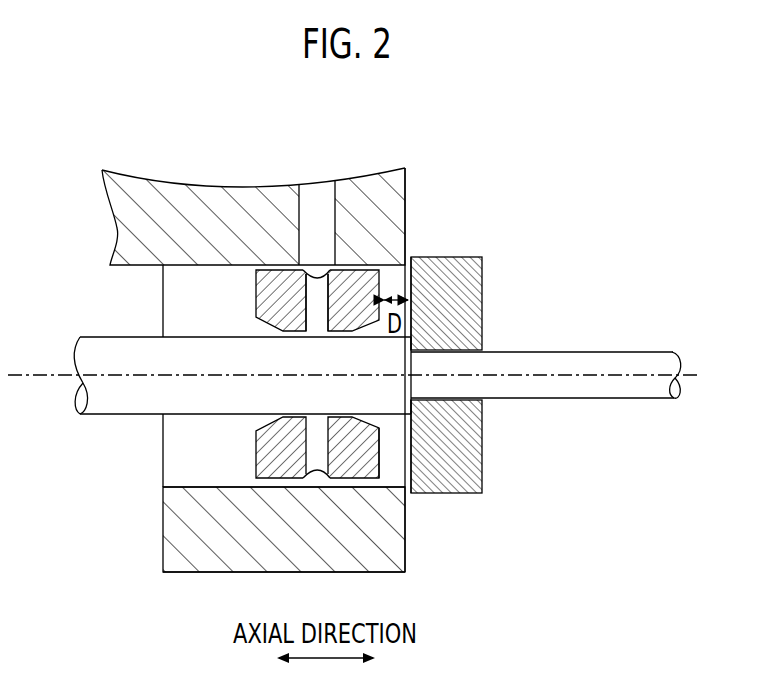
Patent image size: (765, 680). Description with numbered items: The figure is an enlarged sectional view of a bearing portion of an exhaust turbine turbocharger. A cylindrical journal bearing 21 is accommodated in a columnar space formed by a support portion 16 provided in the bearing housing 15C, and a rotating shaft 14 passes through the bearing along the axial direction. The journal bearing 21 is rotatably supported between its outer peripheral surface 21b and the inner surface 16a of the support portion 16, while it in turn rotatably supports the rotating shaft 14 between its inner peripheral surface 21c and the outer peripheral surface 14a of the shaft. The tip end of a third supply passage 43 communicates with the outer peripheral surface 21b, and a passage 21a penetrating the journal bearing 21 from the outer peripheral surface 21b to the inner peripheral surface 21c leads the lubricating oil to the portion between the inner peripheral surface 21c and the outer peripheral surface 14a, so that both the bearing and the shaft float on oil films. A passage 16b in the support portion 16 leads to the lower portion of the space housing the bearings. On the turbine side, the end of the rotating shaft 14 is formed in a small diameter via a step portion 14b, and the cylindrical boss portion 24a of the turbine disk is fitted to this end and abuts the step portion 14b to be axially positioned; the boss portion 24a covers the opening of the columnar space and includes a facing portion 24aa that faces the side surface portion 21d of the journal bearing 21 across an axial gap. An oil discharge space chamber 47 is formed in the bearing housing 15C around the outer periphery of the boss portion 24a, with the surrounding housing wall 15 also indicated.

The rotating shaft 14 is at (354, 362).
The outer peripheral surface of the rotating shaft 14a is at (123, 333).
The step portion 14b is at (413, 407).
The housing (bearing holder) 15 is at (253, 189).
The bearing housing 15C is at (156, 183).
The support portion 16 is at (241, 523).
The inner surface of the support portion 16a is at (163, 475).
The passage 16b is at (163, 558).
The journal bearing 21 is at (301, 365).
The passage 21a is at (318, 317).
The outer peripheral surface of the journal bearing 21b is at (270, 268).
The inner peripheral surface of the journal bearing 21c is at (298, 336).
The side surface portion of the journal bearing 21d is at (380, 451).
The boss portion 24a is at (457, 341).
The facing portion 24aa is at (410, 283).
The third supply passage 43 is at (318, 202).
The oil discharge space chamber 47 is at (457, 291).